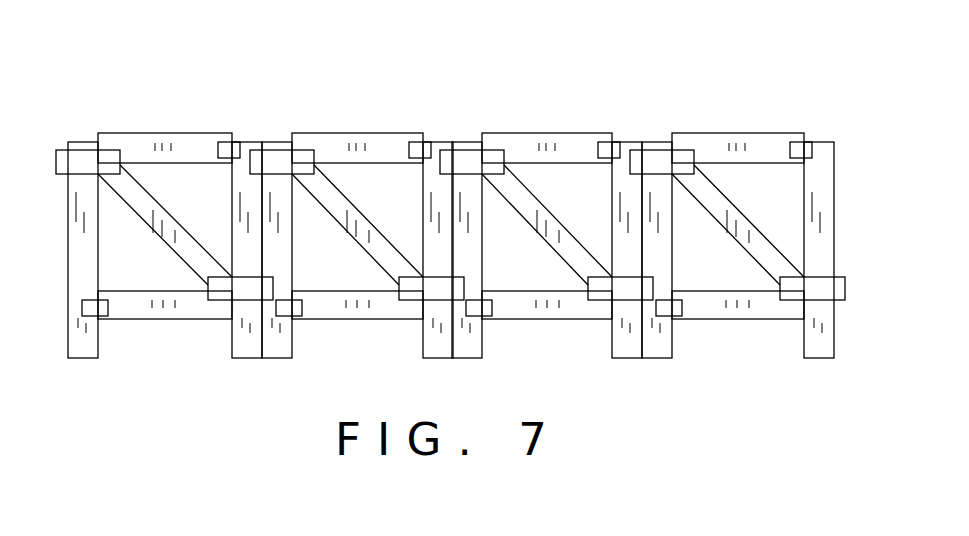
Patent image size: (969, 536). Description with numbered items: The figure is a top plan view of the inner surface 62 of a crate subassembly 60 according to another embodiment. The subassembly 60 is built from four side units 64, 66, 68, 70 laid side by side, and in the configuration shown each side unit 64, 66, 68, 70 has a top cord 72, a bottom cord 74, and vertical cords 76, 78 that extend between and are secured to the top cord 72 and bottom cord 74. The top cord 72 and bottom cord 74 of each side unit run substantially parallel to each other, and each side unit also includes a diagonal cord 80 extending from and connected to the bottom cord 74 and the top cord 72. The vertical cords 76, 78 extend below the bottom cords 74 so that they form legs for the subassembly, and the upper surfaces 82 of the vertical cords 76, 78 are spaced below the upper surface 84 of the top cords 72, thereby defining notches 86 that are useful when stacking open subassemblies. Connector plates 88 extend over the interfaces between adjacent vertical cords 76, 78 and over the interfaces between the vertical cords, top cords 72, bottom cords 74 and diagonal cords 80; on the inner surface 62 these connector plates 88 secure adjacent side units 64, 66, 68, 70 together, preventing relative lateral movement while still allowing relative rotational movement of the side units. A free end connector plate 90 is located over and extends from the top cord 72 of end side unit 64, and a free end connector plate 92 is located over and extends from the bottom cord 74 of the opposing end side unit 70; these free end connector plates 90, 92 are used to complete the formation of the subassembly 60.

The crate subassembly 60 is at (722, 55).
The inner surface 62 is at (170, 148).
The side unit 64 is at (154, 321).
The side unit 66 is at (337, 321).
The side unit 68 is at (524, 321).
The side unit 70 is at (717, 321).
The top cord 72 is at (190, 149).
The bottom cord 74 is at (173, 305).
The vertical cord 76 is at (90, 218).
The vertical cord 78 is at (247, 258).
The diagonal cord 80 is at (137, 203).
The upper surface of vertical cord 82 is at (87, 149).
The upper surface of top cord 84 is at (160, 133).
The notch 86 is at (92, 128).
The connector plate 88 is at (307, 154).
The free end connector plate 90 is at (56, 162).
The free end connector plate 92 is at (847, 291).